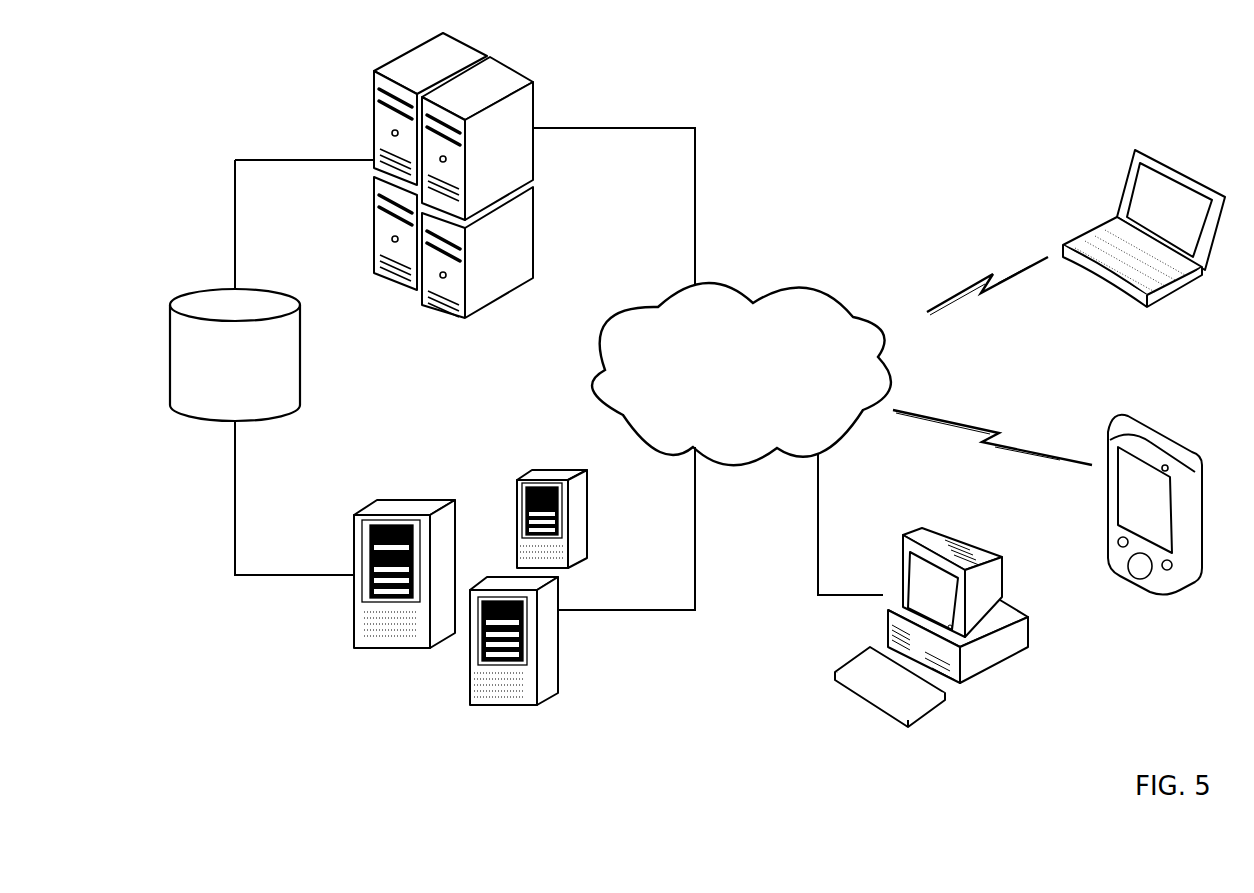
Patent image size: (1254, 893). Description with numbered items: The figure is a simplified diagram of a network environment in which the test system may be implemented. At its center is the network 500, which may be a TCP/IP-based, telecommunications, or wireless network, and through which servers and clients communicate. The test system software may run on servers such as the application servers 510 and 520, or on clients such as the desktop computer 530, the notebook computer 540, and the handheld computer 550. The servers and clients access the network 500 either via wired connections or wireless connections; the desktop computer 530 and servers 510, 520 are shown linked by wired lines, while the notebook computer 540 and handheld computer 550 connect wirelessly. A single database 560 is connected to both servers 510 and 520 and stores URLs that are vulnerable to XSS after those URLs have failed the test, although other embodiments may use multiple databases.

The network 500 is at (732, 285).
The application server 510 is at (502, 60).
The application server 520 is at (412, 497).
The desktop computer 530 is at (957, 530).
The notebook computer 540 is at (1145, 143).
The handheld computer 550 is at (1140, 415).
The database 560 is at (170, 350).